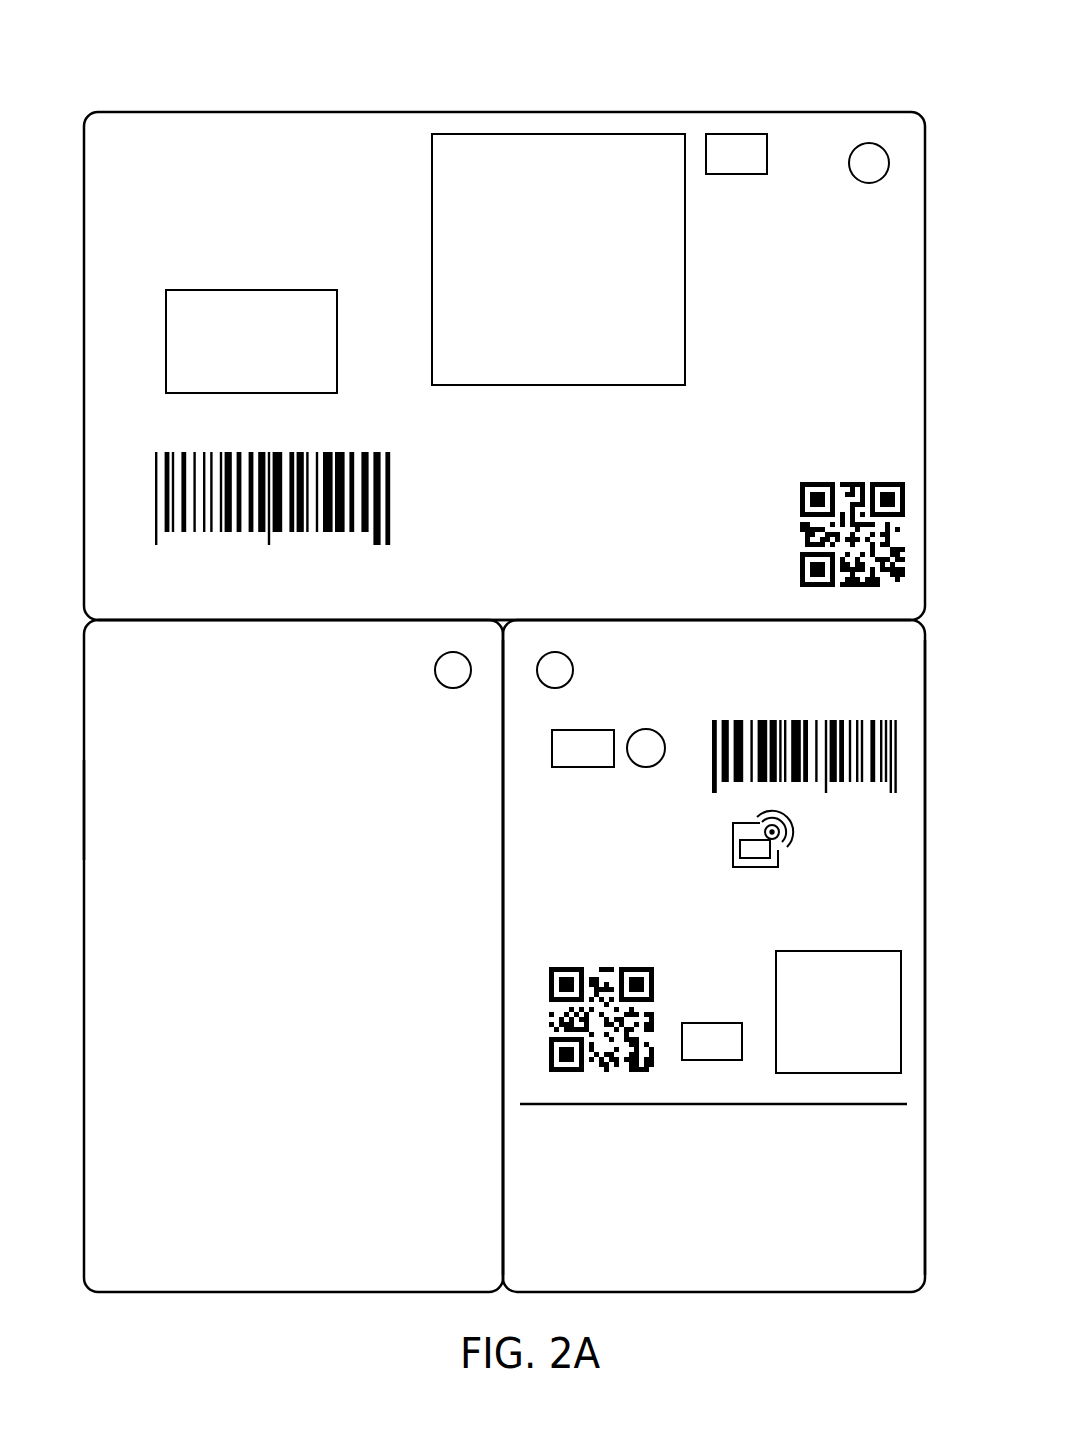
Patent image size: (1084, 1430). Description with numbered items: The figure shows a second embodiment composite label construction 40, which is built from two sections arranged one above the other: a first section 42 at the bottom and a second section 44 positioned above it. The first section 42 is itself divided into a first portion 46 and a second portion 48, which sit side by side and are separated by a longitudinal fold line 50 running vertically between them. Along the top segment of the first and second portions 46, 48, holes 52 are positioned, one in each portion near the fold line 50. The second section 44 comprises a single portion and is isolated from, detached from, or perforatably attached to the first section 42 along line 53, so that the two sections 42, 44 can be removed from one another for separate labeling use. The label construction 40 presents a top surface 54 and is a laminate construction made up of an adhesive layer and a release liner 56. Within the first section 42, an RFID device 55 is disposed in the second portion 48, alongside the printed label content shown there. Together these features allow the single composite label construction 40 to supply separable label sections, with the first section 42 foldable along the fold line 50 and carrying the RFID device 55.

The composite label construction 40 is at (504, 671).
The first section 42 is at (78, 957).
The second section 44 is at (78, 367).
The first portion 46 is at (289, 1282).
The second portion 48 is at (725, 1282).
The longitudinal fold line 50 is at (504, 1203).
The holes 52 is at (435, 670).
The line 53 is at (290, 621).
The top surface 54 is at (80, 810).
The RFID device 55 is at (703, 890).
The release liner 56 is at (925, 1190).